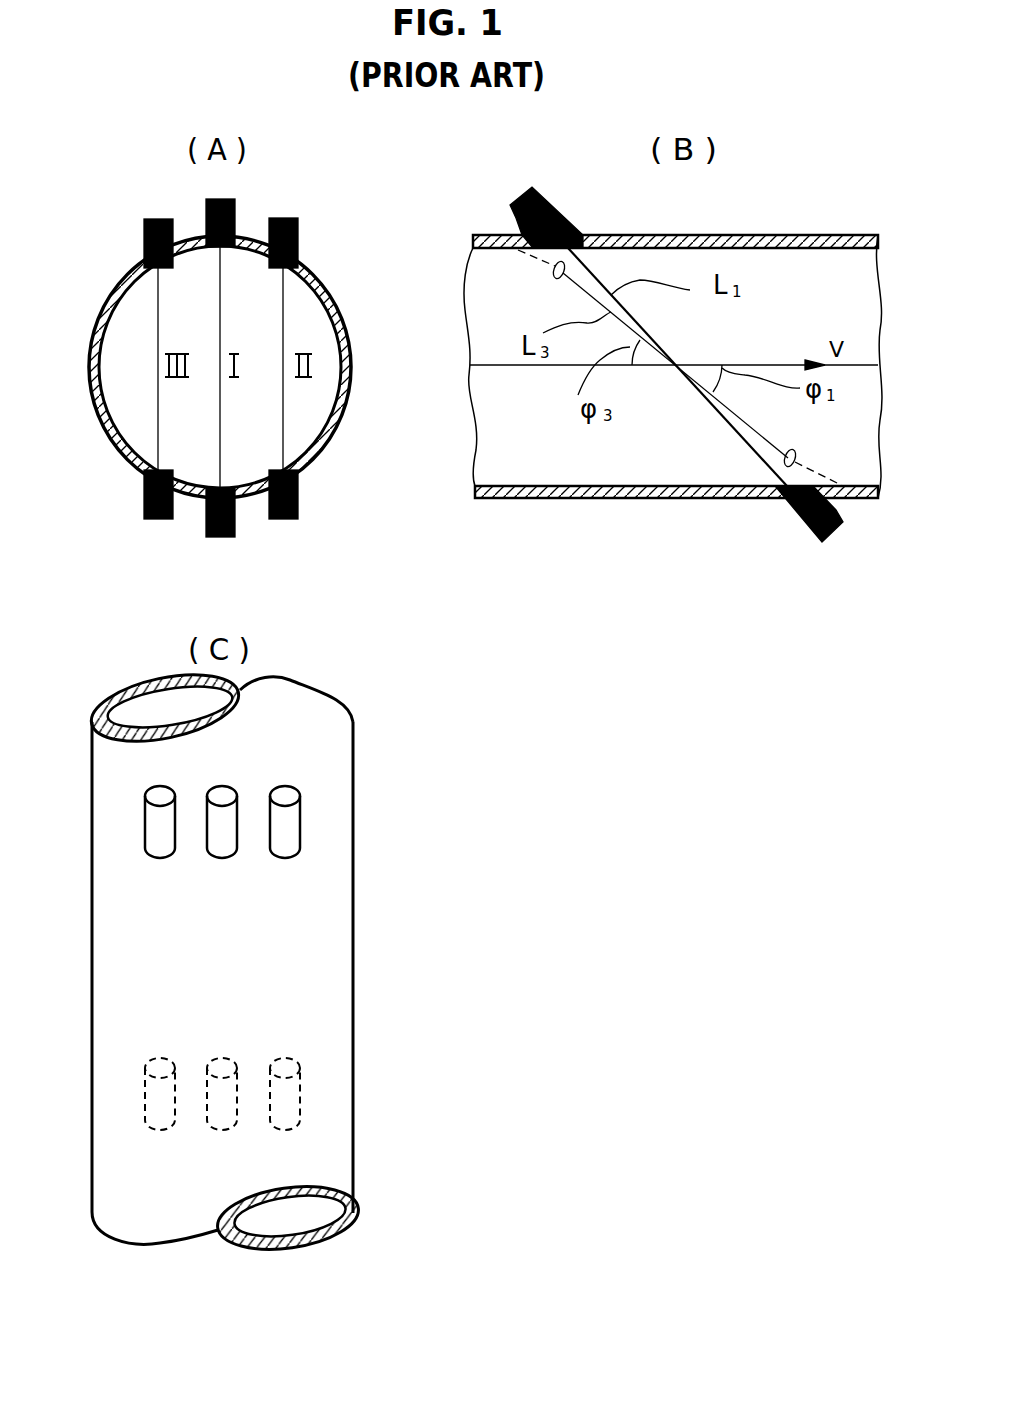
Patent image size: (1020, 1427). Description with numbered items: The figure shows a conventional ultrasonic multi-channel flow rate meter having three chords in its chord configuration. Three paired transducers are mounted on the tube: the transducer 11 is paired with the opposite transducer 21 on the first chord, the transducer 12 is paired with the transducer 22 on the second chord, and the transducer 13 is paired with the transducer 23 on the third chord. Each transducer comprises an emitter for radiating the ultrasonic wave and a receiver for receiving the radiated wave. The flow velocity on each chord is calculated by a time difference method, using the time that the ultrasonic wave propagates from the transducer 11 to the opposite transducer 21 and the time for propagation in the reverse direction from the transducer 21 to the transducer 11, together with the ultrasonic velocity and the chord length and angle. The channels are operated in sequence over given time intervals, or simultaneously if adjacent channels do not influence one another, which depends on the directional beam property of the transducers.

The transducer 11 is at (233, 890).
The transducer 12 is at (298, 221).
The transducer 13 is at (155, 893).
The transducer 21 is at (817, 566).
The transducer 22 is at (298, 512).
The transducer 23 is at (162, 520).